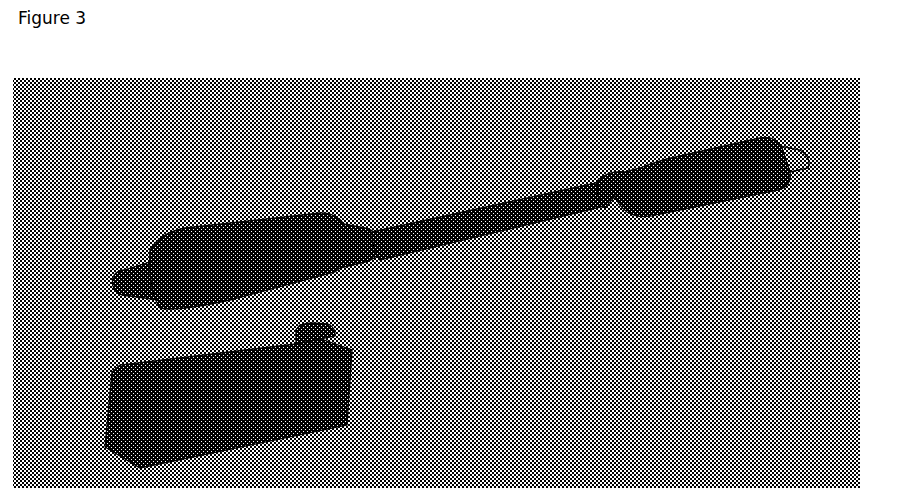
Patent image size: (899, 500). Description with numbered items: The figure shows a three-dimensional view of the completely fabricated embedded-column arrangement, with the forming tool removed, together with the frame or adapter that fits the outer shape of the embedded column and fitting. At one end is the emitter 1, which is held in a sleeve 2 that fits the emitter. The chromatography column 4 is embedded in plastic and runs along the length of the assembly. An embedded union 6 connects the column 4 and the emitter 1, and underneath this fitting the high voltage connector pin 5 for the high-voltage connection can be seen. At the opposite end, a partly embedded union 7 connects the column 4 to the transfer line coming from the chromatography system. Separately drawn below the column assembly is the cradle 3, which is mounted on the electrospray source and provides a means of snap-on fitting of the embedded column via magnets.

The emitter 1 is at (415, 198).
The sleeve 2 is at (120, 226).
The cradle 3 is at (347, 425).
The chromatography column 4 is at (455, 235).
The high voltage connector pin 5 is at (283, 315).
The embedded union 6 is at (312, 200).
The partly embedded union 7 is at (720, 148).